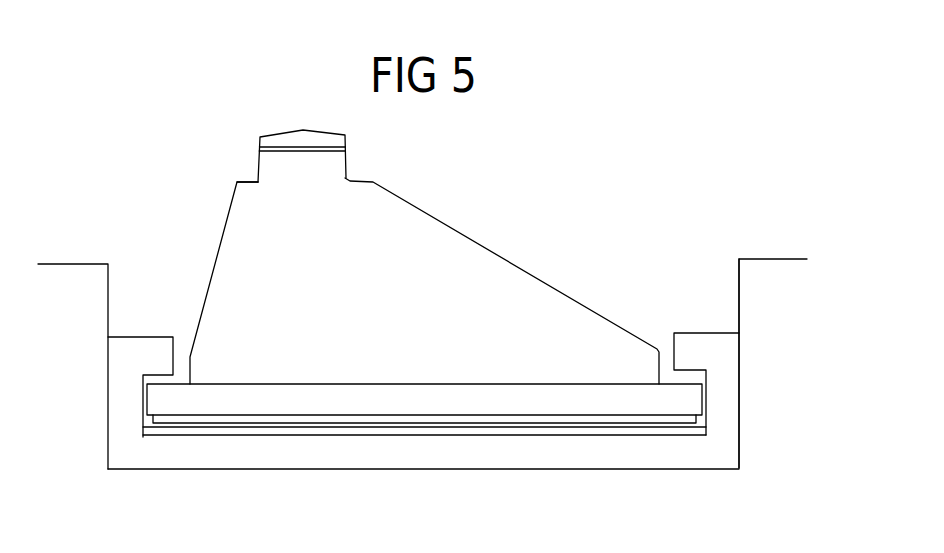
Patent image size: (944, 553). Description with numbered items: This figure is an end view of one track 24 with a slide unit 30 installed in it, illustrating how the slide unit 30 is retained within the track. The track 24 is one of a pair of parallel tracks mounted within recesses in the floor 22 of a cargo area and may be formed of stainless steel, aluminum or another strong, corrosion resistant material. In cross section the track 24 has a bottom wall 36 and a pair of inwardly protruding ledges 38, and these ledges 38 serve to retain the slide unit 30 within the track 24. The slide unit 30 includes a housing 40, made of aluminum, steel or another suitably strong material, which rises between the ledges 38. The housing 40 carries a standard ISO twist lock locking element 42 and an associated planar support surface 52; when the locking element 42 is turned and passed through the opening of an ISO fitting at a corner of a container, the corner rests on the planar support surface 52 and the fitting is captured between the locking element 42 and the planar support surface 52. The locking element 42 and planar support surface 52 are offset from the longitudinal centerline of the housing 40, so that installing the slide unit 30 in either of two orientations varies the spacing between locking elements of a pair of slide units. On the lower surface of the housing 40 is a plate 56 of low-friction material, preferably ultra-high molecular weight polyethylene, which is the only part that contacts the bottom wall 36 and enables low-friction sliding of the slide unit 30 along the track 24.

The floor 22 is at (758, 259).
The track 24 is at (740, 418).
The slide unit 30 is at (540, 213).
The bottom wall 36 is at (253, 458).
The ledges 38 is at (158, 345).
The housing 40 is at (407, 227).
The locking element 42 is at (303, 130).
The planar support surface 52 is at (245, 182).
The plate 56 is at (505, 418).